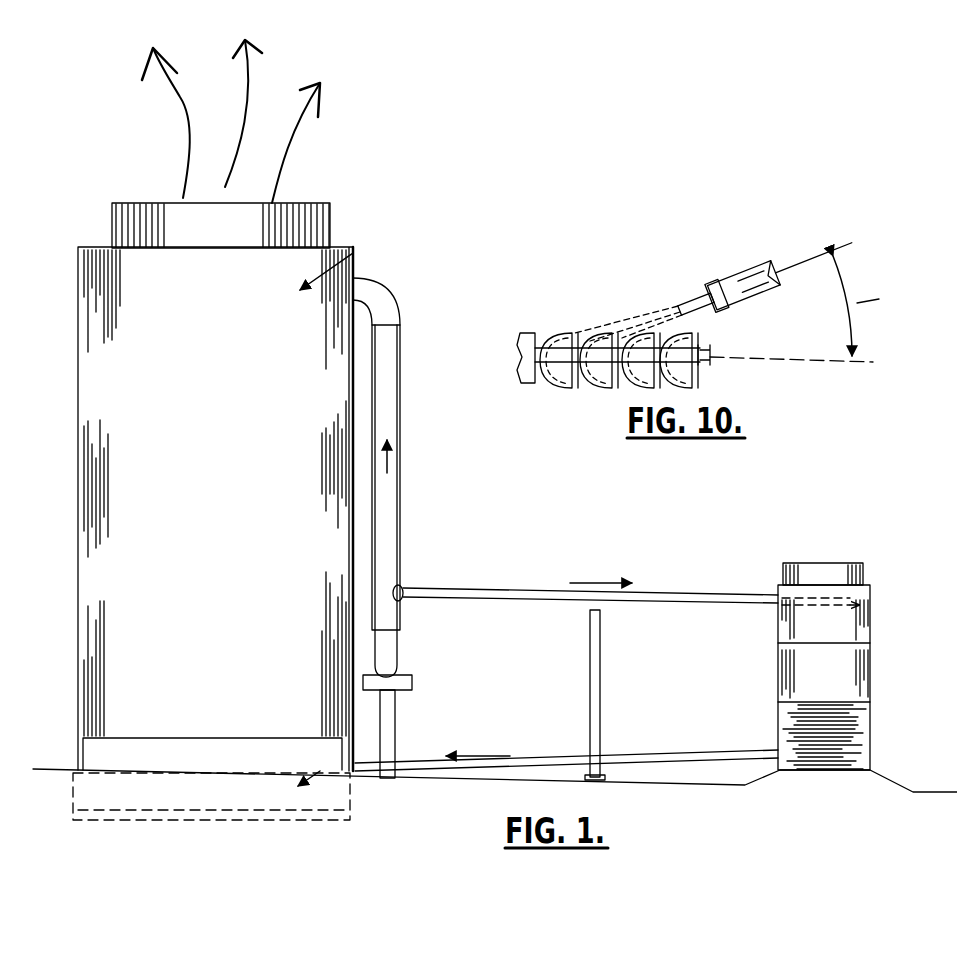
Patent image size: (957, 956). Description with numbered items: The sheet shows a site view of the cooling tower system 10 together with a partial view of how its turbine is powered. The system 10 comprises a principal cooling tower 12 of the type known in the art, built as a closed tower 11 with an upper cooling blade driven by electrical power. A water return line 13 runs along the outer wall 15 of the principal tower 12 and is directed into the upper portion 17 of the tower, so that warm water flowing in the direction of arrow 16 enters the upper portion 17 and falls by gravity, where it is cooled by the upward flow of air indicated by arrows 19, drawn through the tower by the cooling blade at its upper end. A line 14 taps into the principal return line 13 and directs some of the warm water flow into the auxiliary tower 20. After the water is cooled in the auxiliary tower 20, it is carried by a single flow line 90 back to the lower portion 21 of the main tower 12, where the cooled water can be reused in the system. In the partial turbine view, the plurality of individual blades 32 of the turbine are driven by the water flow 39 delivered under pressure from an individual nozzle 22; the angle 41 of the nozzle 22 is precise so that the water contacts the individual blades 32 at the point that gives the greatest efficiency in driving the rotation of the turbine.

In FIG. 1, the system 10 is at (496, 480).
In FIG. 1, the closed tower 11 is at (88, 392).
In FIG. 1, the principal cooling tower 12 is at (353, 253).
In FIG. 1, the water return line 13 is at (387, 363).
In FIG. 1, the line 14 is at (513, 590).
In FIG. 1, the outer wall 15 is at (383, 560).
In FIG. 1, the arrow 16 is at (383, 473).
In FIG. 1, the upper portion 17 is at (200, 303).
In FIG. 1, the arrows 19 is at (183, 123).
In FIG. 1, the auxiliary tower 20 is at (863, 615).
In FIG. 1, the lower portion 21 is at (270, 800).
In FIG. 10, the nozzle 22 is at (733, 270).
In FIG. 10, the individual blades 32 is at (560, 350).
In FIG. 10, the water flow 39 is at (655, 317).
In FIG. 10, the angle 41 is at (857, 303).
In FIG. 1, the single flow line 90 is at (535, 760).